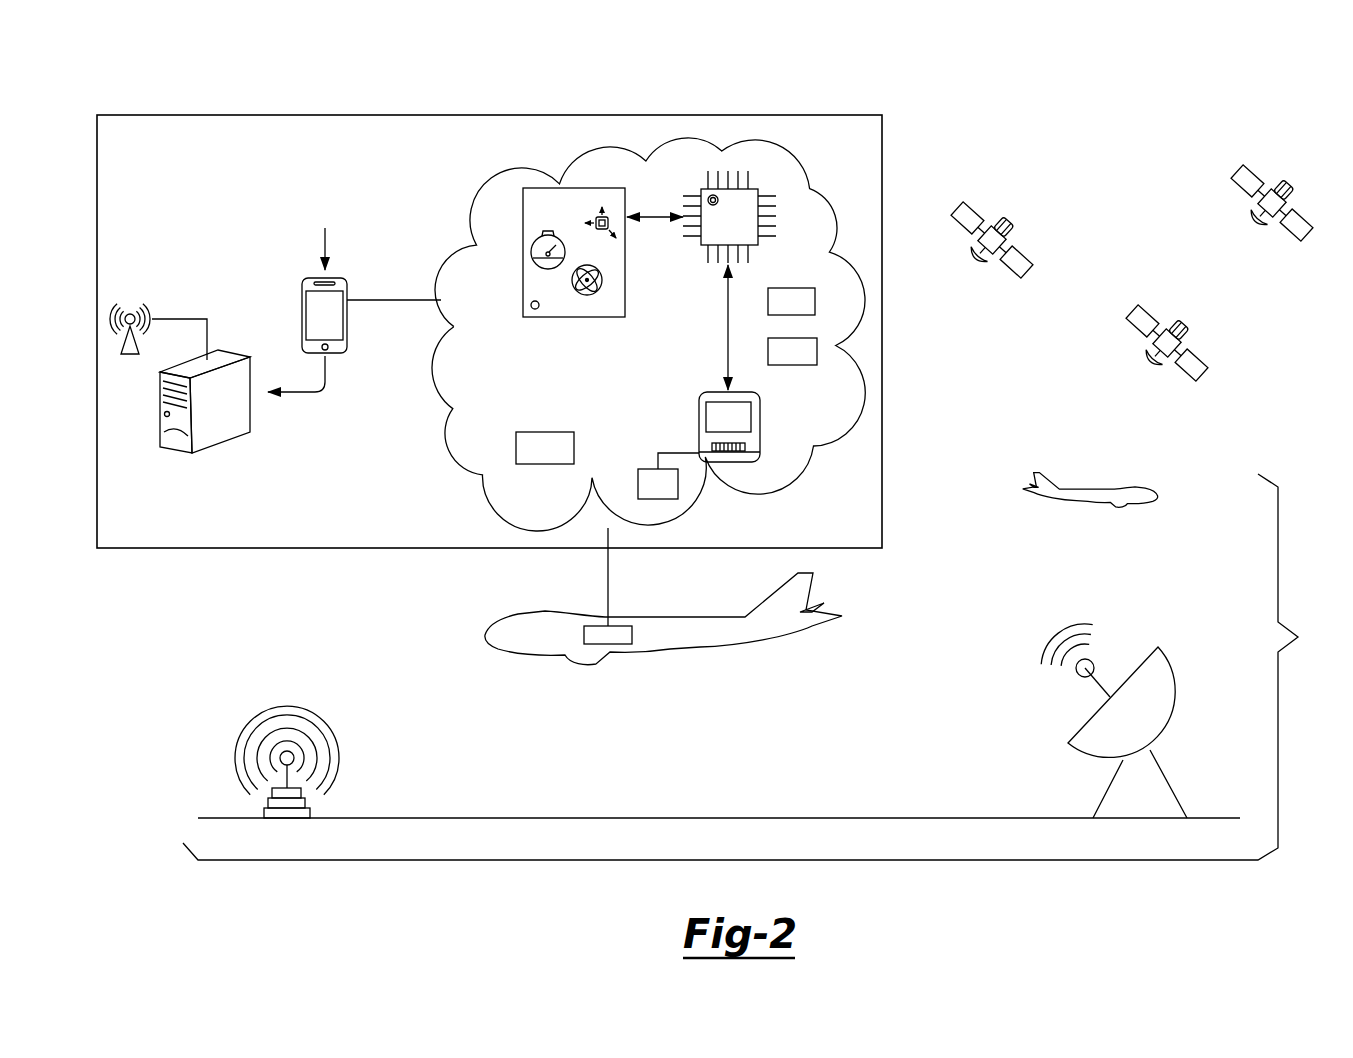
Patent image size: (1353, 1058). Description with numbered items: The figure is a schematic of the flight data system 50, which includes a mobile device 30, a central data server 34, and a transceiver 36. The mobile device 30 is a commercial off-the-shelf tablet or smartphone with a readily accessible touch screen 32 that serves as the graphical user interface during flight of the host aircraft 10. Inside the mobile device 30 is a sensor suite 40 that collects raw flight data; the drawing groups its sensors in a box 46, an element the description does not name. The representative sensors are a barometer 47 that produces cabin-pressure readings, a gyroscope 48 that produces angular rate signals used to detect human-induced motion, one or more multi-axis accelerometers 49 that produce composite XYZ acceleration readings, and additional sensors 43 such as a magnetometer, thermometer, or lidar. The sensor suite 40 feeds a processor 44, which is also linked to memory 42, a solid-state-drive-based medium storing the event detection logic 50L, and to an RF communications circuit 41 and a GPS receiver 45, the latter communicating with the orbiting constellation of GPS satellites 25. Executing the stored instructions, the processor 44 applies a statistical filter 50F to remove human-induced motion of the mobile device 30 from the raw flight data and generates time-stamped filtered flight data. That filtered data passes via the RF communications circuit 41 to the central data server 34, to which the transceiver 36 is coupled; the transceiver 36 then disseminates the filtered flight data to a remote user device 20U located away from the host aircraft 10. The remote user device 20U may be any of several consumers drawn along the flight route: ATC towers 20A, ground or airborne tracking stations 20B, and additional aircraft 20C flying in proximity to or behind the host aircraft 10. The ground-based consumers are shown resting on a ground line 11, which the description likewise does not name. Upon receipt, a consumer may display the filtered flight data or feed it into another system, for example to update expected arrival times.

The flight data system 50 is at (180, 113).
The transceiver 36 is at (125, 290).
The touch screen 32 is at (312, 310).
The mobile device 30 is at (381, 270).
The central data server 34 is at (226, 430).
The sensor suite 40 is at (445, 455).
The sensor unit 46 is at (578, 317).
The barometer 47 is at (540, 270).
The gyroscope 48 is at (604, 283).
The multi-axis accelerometers 49 is at (593, 222).
The additional sensors 43 is at (533, 310).
The processor 44 is at (776, 212).
The RF communications circuit 41 is at (815, 302).
The GPS receiver 45 is at (817, 352).
The memory 42 is at (704, 392).
The statistical filter 50F is at (574, 448).
The event detection logic 50L is at (668, 476).
The host aircraft 10 is at (522, 677).
The ground 11 is at (673, 815).
The remote user device 20U is at (765, 667).
The ATC towers 20A is at (215, 745).
The tracking stations 20B is at (1190, 634).
The additional aircraft 20C is at (1044, 530).
The GPS satellites 25 is at (1082, 137).